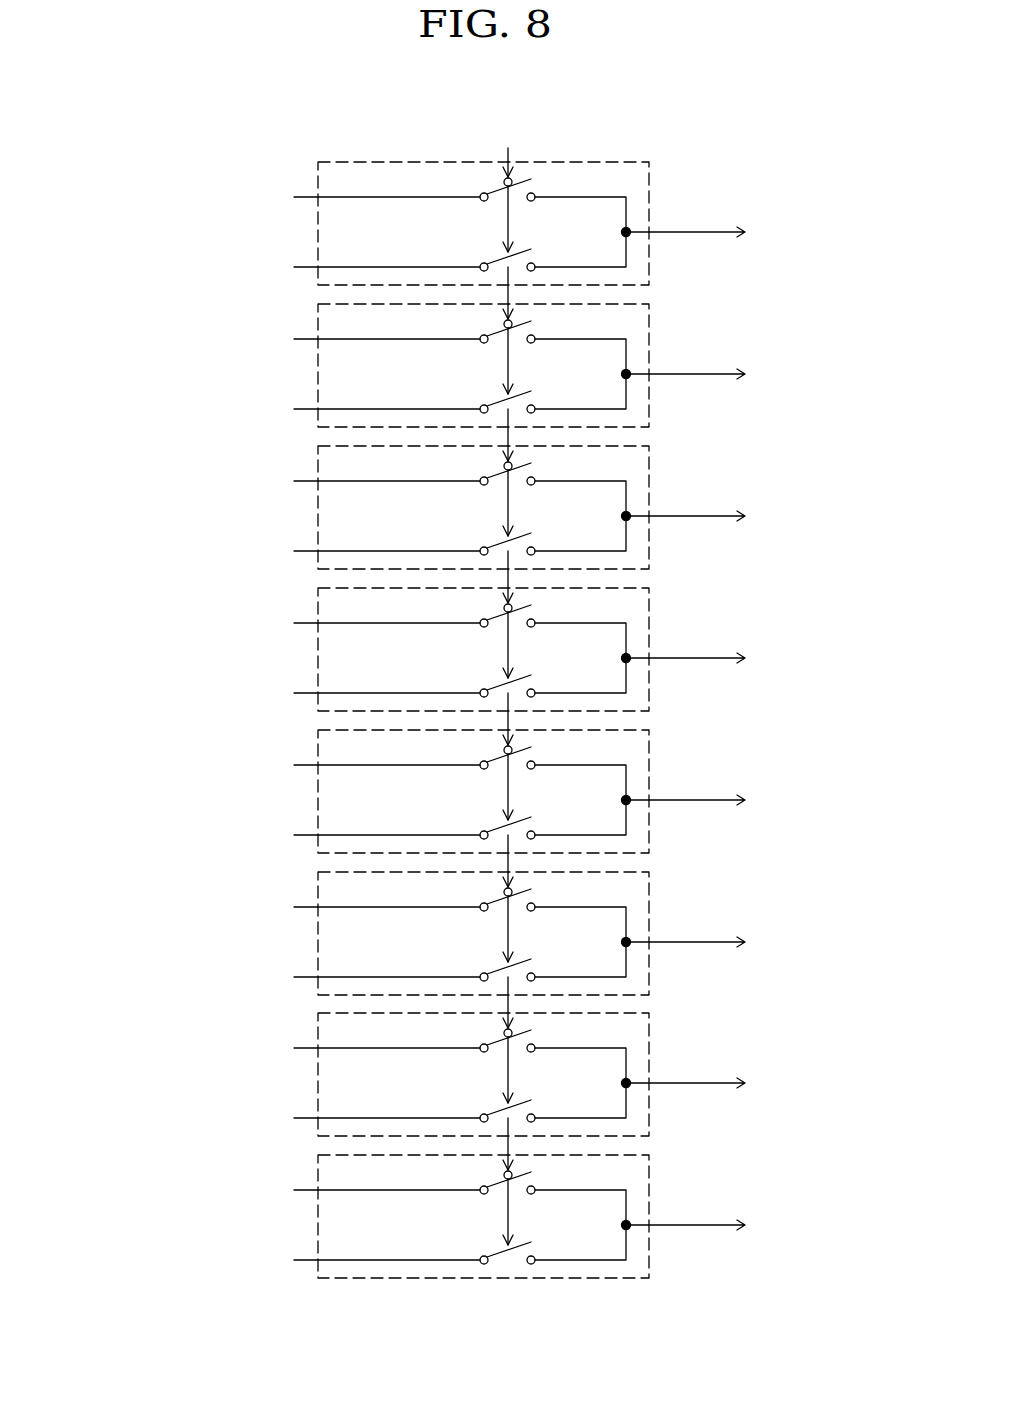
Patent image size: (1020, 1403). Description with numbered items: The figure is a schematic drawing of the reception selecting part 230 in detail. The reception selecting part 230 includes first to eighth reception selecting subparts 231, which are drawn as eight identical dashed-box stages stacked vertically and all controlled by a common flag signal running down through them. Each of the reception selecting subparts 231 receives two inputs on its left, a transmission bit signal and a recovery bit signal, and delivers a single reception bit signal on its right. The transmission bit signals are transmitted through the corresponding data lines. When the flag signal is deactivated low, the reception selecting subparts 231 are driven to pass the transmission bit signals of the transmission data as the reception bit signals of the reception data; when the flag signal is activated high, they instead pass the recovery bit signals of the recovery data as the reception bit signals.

The reception selecting part 230 is at (755, 134).
The reception selecting subparts 231 is at (458, 713).